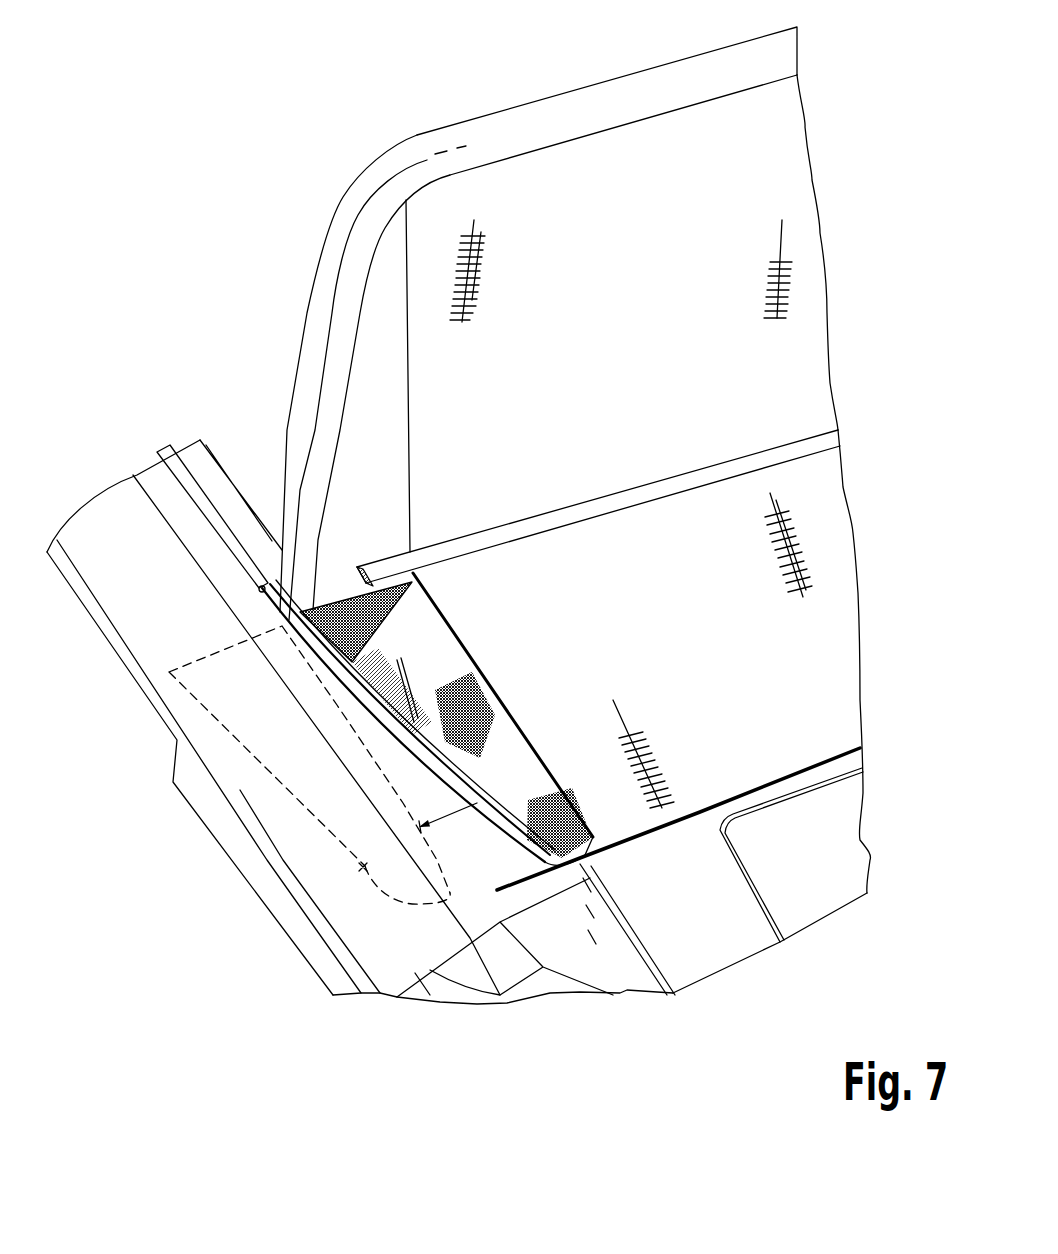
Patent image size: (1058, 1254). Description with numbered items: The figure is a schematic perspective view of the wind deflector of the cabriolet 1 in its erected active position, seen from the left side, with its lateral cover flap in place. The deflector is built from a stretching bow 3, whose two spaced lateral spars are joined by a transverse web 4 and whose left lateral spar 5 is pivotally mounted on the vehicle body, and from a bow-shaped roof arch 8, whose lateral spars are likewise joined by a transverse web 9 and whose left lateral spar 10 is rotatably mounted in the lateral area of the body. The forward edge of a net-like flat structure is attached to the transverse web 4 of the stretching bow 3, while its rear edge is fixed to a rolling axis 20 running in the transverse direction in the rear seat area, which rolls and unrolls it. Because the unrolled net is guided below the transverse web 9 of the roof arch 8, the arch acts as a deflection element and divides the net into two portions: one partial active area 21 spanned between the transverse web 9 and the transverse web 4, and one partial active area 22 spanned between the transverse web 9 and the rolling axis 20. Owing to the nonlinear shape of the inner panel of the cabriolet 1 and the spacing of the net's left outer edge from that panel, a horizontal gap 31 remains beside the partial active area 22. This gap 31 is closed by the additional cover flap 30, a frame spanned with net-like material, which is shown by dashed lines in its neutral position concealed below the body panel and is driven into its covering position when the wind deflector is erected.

The cabriolet 1 is at (212, 139).
The stretching bow 3 is at (413, 130).
The transverse web 4 is at (536, 116).
The left lateral spar 5 is at (310, 330).
The roof arch 8 is at (644, 516).
The transverse web 9 is at (672, 484).
The left lateral spar 10 is at (400, 652).
The rolling axis 20 is at (733, 797).
The partial active area 21 is at (758, 170).
The partial active area 22 is at (828, 624).
The cover flap 30 is at (467, 663).
The gap 31 is at (343, 572).